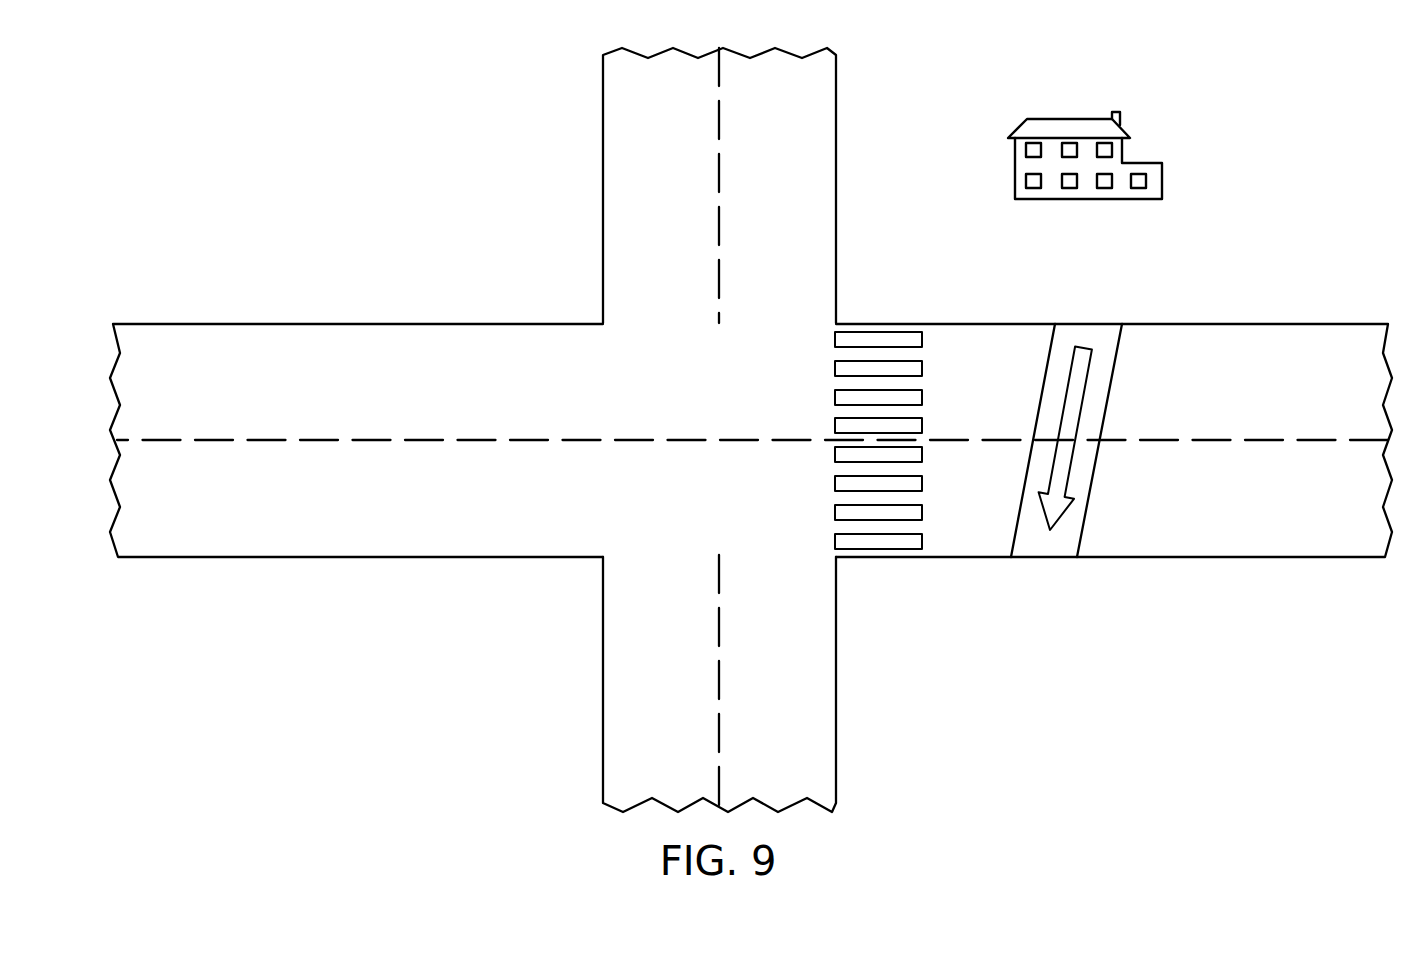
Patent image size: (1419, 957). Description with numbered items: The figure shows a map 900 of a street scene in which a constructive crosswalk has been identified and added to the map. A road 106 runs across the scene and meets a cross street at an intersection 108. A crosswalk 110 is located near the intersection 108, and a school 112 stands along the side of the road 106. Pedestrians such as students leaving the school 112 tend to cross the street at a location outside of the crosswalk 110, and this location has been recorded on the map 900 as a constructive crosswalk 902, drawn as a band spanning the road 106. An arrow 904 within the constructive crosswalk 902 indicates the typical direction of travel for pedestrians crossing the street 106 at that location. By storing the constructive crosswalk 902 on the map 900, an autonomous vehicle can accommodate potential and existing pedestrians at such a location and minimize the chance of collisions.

The map 900 is at (202, 122).
The road 106 is at (1290, 540).
The intersection 108 is at (580, 298).
The crosswalk 110 is at (878, 306).
The school 112 is at (1068, 118).
The constructive crosswalk 902 is at (1136, 347).
The arrow 904 is at (1087, 346).